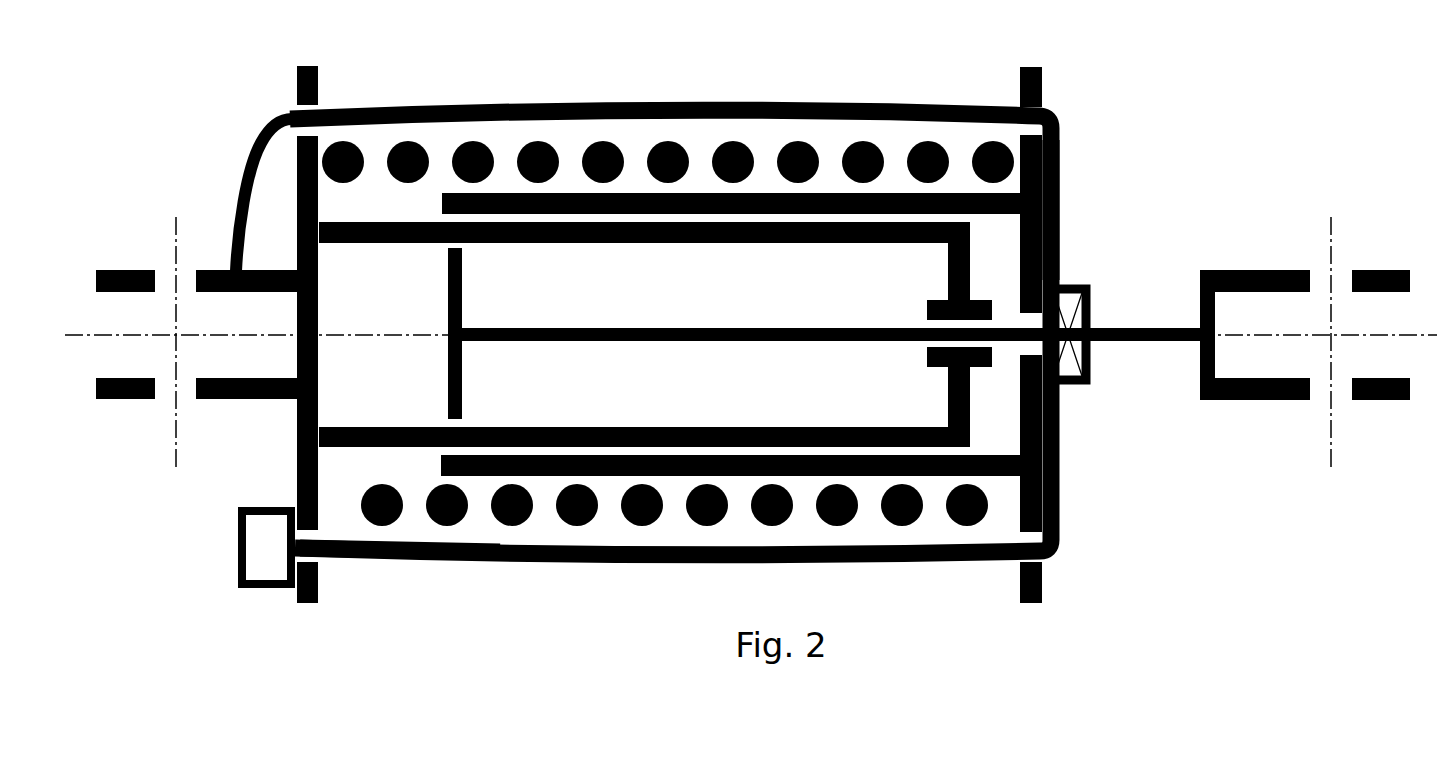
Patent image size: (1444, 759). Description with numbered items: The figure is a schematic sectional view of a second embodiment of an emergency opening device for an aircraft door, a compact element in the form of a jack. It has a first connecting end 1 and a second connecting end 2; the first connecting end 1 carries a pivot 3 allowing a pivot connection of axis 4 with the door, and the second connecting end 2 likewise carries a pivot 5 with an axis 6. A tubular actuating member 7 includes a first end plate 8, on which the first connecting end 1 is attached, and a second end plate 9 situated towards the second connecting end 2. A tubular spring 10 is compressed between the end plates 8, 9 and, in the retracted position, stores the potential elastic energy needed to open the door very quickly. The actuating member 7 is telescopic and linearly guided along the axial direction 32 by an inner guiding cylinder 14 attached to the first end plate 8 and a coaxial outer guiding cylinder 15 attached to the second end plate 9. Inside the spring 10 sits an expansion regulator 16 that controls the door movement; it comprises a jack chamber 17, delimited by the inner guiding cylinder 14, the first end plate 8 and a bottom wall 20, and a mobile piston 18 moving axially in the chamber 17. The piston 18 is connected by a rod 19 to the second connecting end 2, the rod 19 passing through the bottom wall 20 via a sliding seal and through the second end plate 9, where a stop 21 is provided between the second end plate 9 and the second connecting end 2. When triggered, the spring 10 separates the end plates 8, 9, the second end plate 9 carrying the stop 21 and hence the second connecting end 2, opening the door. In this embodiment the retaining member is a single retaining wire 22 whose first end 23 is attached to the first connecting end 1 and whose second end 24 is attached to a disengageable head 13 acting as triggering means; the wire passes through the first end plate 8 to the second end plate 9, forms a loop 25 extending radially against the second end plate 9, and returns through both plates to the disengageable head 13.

The first connecting end 1 is at (122, 268).
The second connecting end 2 is at (1367, 270).
The pivot 3 is at (156, 282).
The axis 4 is at (177, 458).
The pivot 5 is at (1312, 283).
The axis 6 is at (1333, 253).
The tubular actuating member 7 is at (1046, 78).
The first end plate 8 is at (297, 253).
The second end plate 9 is at (1043, 592).
The tubular spring 10 is at (605, 140).
The disengageable head 13 is at (252, 560).
The inner guiding cylinder 14 is at (625, 243).
The outer guiding cylinder 15 is at (508, 192).
The expansion regulator 16 is at (976, 397).
The jack chamber 17 is at (765, 393).
The mobile piston 18 is at (462, 412).
The rod 19 is at (775, 327).
The bottom wall 20 is at (947, 398).
The stop 21 is at (1091, 357).
The retaining wire 22 is at (752, 103).
The first end 23 is at (227, 267).
The second end 24 is at (318, 557).
The loop 25 is at (1060, 230).
The axial direction 32 is at (87, 336).